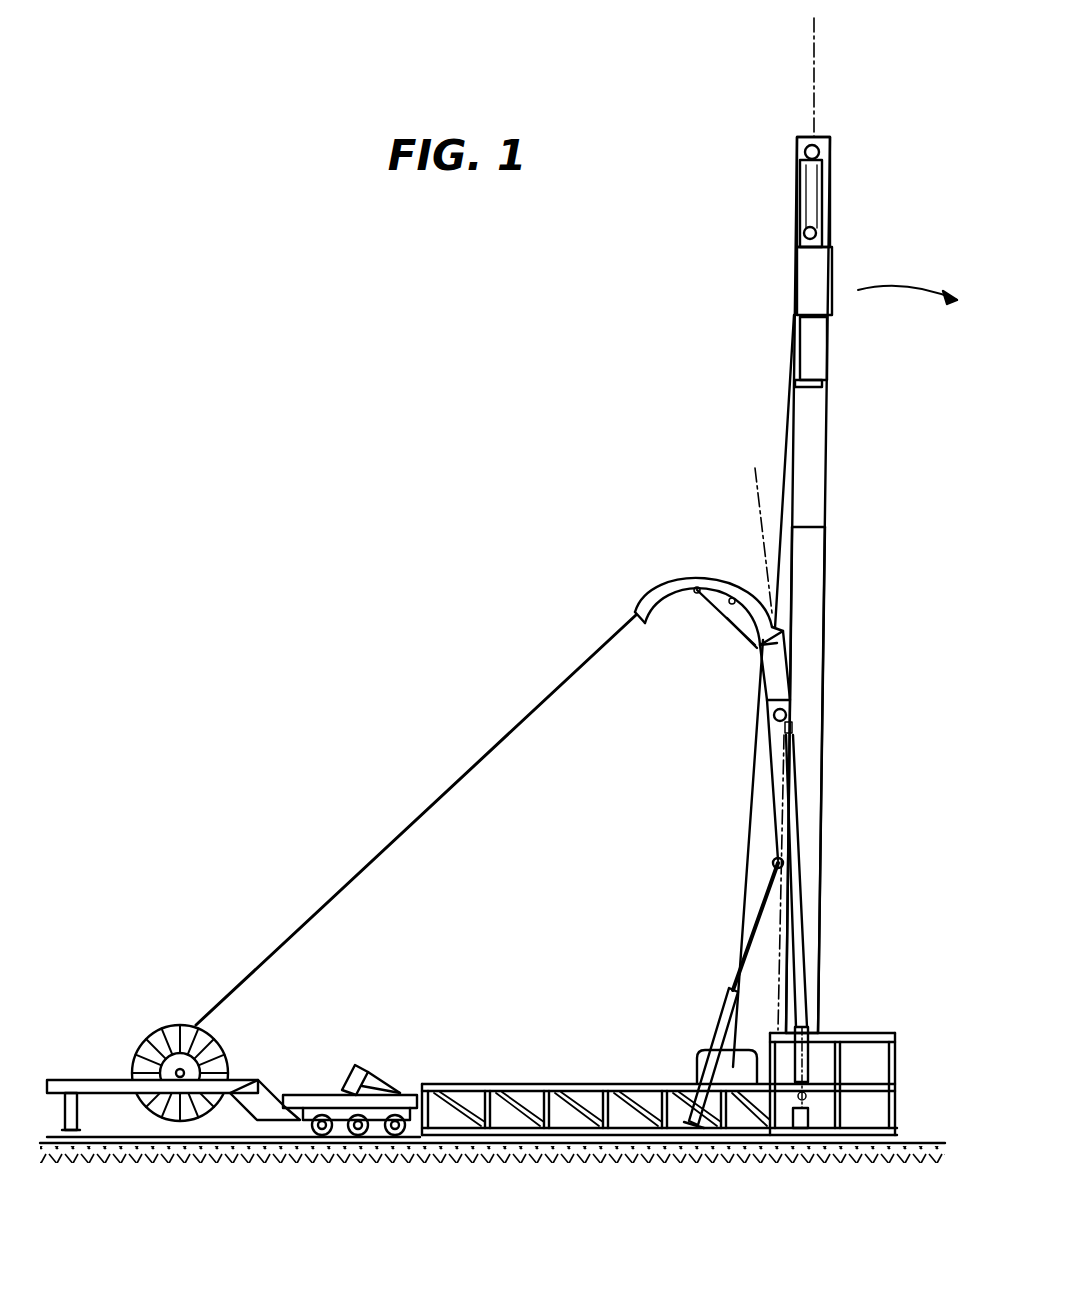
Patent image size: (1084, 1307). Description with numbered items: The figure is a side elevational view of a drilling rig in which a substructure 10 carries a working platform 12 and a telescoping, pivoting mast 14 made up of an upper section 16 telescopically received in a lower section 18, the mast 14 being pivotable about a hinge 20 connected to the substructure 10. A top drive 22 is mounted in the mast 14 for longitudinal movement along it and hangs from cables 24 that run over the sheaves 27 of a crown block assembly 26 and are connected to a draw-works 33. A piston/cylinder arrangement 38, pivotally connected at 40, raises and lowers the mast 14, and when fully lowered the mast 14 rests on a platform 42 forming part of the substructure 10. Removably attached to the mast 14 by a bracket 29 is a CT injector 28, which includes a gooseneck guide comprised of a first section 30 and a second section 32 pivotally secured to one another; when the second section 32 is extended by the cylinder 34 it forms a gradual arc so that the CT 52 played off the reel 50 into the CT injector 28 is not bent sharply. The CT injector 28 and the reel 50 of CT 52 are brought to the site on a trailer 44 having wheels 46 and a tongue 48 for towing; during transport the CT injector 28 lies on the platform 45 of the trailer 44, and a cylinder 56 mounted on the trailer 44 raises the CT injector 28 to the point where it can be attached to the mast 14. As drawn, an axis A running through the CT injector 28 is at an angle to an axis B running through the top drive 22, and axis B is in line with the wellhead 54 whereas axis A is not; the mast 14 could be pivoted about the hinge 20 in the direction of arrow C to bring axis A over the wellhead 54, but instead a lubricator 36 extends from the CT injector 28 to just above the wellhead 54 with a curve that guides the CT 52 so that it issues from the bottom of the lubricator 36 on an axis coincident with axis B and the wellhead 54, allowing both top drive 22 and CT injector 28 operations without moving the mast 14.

The substructure 10 is at (563, 1137).
The working platform 12 is at (868, 1083).
The mast 14 is at (748, 438).
The upper section 16 is at (830, 425).
The lower section 18 is at (817, 662).
The hinge 20 is at (785, 1125).
The top drive 22 is at (808, 279).
The cables 24 is at (795, 193).
The crown block assembly 26 is at (795, 147).
The sheaves 27 is at (832, 152).
The CT injector 28 is at (740, 682).
The bracket 29 is at (770, 712).
The first section of guide 30 is at (755, 602).
The second section of guide 32 is at (657, 592).
The draw-works 33 is at (702, 1050).
The cylinder 34 is at (730, 632).
The lubricator 36 is at (775, 788).
The piston/cylinder arrangement 38 is at (727, 997).
The pivot connection 40 is at (697, 1123).
The platform 42 is at (530, 1083).
The trailer 44 is at (262, 1108).
The platform of trailer 45 is at (313, 1092).
The wheels 46 is at (322, 1137).
The tongue 48 is at (82, 1077).
The reel 50 is at (160, 1037).
The CT 52 is at (425, 808).
The wellhead 54 is at (807, 1120).
The cylinder 56 is at (377, 1077).
The axis A is at (753, 475).
The axis B is at (825, 32).
The arrow C is at (907, 312).